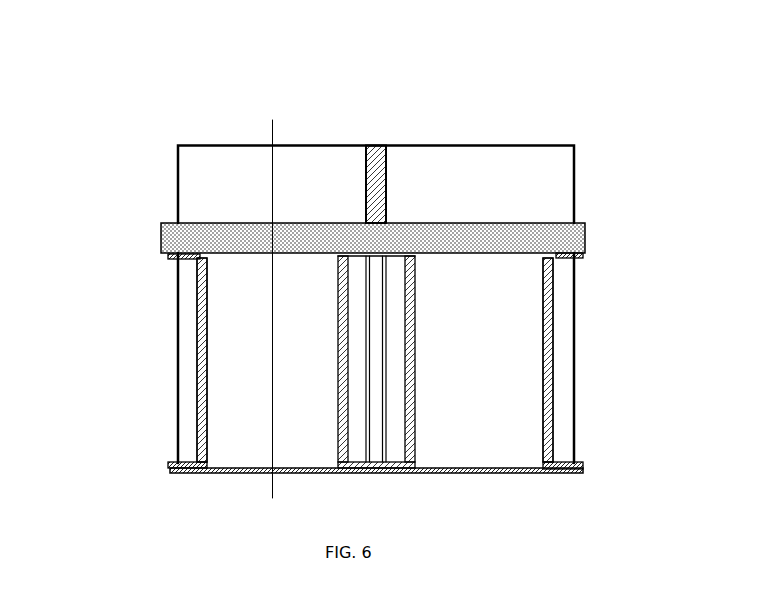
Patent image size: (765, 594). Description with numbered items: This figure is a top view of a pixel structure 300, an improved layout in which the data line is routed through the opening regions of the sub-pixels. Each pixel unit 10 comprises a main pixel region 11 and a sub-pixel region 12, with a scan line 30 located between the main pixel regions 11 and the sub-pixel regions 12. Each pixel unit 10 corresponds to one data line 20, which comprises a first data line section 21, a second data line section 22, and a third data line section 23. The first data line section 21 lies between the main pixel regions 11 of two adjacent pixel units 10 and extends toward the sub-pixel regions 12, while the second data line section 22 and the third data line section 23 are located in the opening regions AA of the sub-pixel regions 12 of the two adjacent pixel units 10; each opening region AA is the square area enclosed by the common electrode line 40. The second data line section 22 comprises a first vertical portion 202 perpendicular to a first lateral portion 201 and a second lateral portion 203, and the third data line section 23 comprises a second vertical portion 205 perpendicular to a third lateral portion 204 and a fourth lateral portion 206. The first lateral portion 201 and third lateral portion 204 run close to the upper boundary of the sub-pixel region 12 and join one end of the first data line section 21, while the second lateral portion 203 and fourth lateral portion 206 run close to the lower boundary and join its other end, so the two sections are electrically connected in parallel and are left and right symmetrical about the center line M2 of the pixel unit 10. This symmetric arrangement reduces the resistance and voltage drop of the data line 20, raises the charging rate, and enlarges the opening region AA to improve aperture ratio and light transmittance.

The pixel structure 300 is at (230, 68).
The pixel unit 10 is at (421, 305).
The main pixel region 11 is at (547, 158).
The sub-pixel region 12 is at (515, 268).
The data line 20 is at (374, 270).
The first data line section 21 is at (376, 160).
The second data line section 22 is at (342, 255).
The third data line section 23 is at (409, 255).
The scan line 30 is at (495, 243).
The common electrode line 40 is at (473, 472).
The first lateral portion 201 is at (563, 257).
The first vertical portion 202 is at (548, 342).
The second lateral portion 203 is at (563, 463).
The third lateral portion 204 is at (172, 260).
The second vertical portion 205 is at (199, 377).
The fourth lateral portion 206 is at (170, 464).
The center line M2 is at (264, 299).
The opening region AA is at (503, 452).